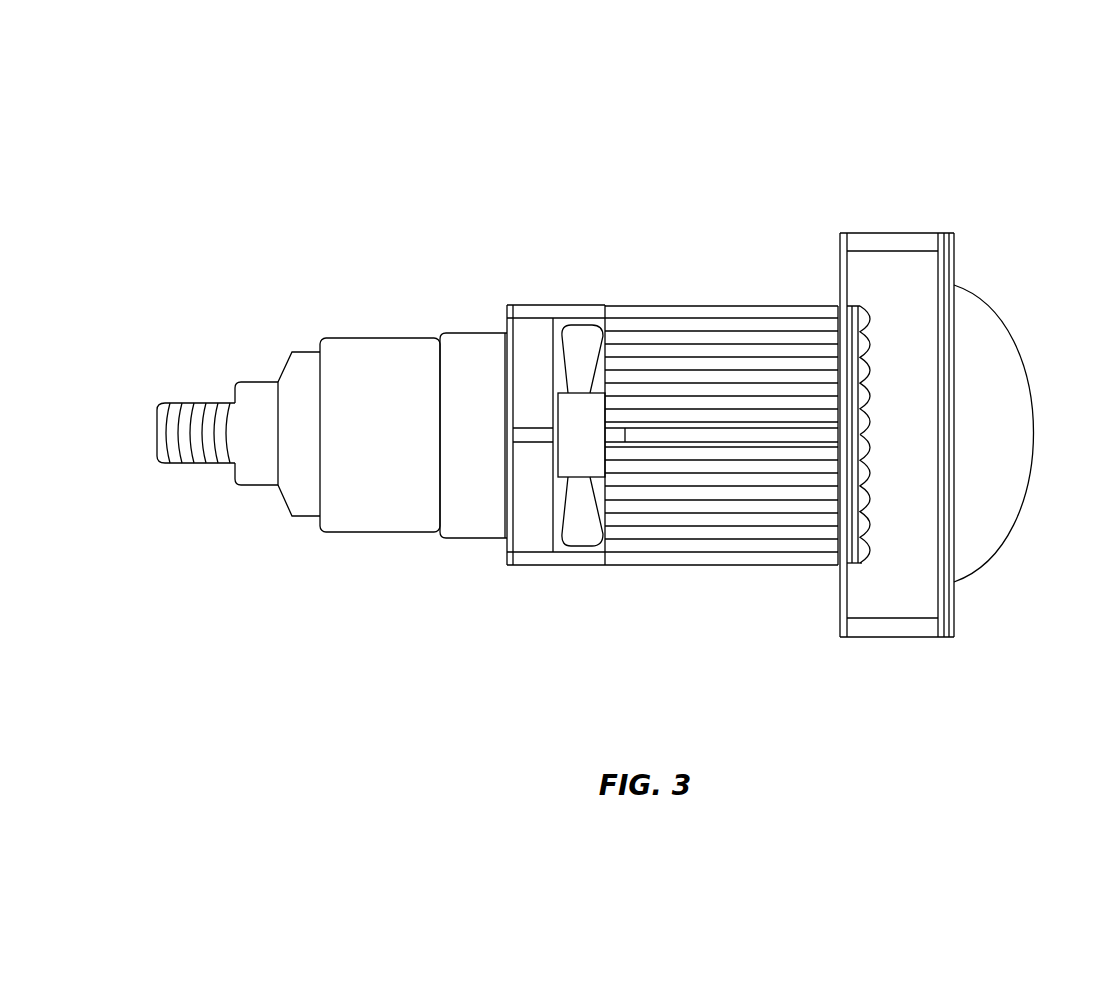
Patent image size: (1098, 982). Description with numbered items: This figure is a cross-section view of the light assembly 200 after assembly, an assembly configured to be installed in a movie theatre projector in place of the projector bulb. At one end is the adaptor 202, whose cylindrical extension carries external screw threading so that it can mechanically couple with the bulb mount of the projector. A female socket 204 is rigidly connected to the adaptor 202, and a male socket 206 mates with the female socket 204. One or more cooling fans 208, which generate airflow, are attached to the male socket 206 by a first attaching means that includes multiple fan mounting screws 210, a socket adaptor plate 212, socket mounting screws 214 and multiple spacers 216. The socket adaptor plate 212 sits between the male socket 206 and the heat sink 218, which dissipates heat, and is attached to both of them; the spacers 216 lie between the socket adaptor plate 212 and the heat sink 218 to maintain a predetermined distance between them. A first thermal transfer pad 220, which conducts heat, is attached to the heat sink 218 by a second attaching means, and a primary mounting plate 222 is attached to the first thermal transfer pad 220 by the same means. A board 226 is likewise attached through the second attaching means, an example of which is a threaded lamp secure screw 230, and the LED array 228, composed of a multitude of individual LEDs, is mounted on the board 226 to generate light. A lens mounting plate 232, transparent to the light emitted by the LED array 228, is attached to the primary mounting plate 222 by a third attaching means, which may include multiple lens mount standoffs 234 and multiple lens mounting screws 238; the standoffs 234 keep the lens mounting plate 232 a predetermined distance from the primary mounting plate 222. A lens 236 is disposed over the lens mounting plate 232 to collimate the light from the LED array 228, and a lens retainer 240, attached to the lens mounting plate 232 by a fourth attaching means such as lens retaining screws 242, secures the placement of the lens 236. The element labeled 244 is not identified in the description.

The light assembly 200 is at (607, 121).
The adaptor 202 is at (238, 394).
The female socket 204 is at (355, 472).
The male socket 206 is at (438, 472).
The cooling fan 208 is at (594, 389).
The fan mounting screws 210 is at (500, 303).
The socket adaptor plate 212 is at (526, 488).
The socket mounting screws 214 is at (454, 437).
The spacers 216 is at (556, 431).
The heat sink 218 is at (721, 394).
The first thermal transfer pad 220 is at (803, 472).
The primary mounting plate 222 is at (819, 467).
The board 226 is at (879, 407).
The LED array 228 is at (895, 370).
The threaded lamp secure screw 230 is at (895, 495).
The lens mounting plate 232 is at (967, 394).
The lens mount standoffs 234 is at (897, 424).
The lens 236 is at (1017, 433).
The lens mounting screws 238 is at (985, 428).
The lens retainer 240 is at (1002, 425).
The lens retaining screws 242 is at (1002, 435).
The board mount 244 is at (879, 589).